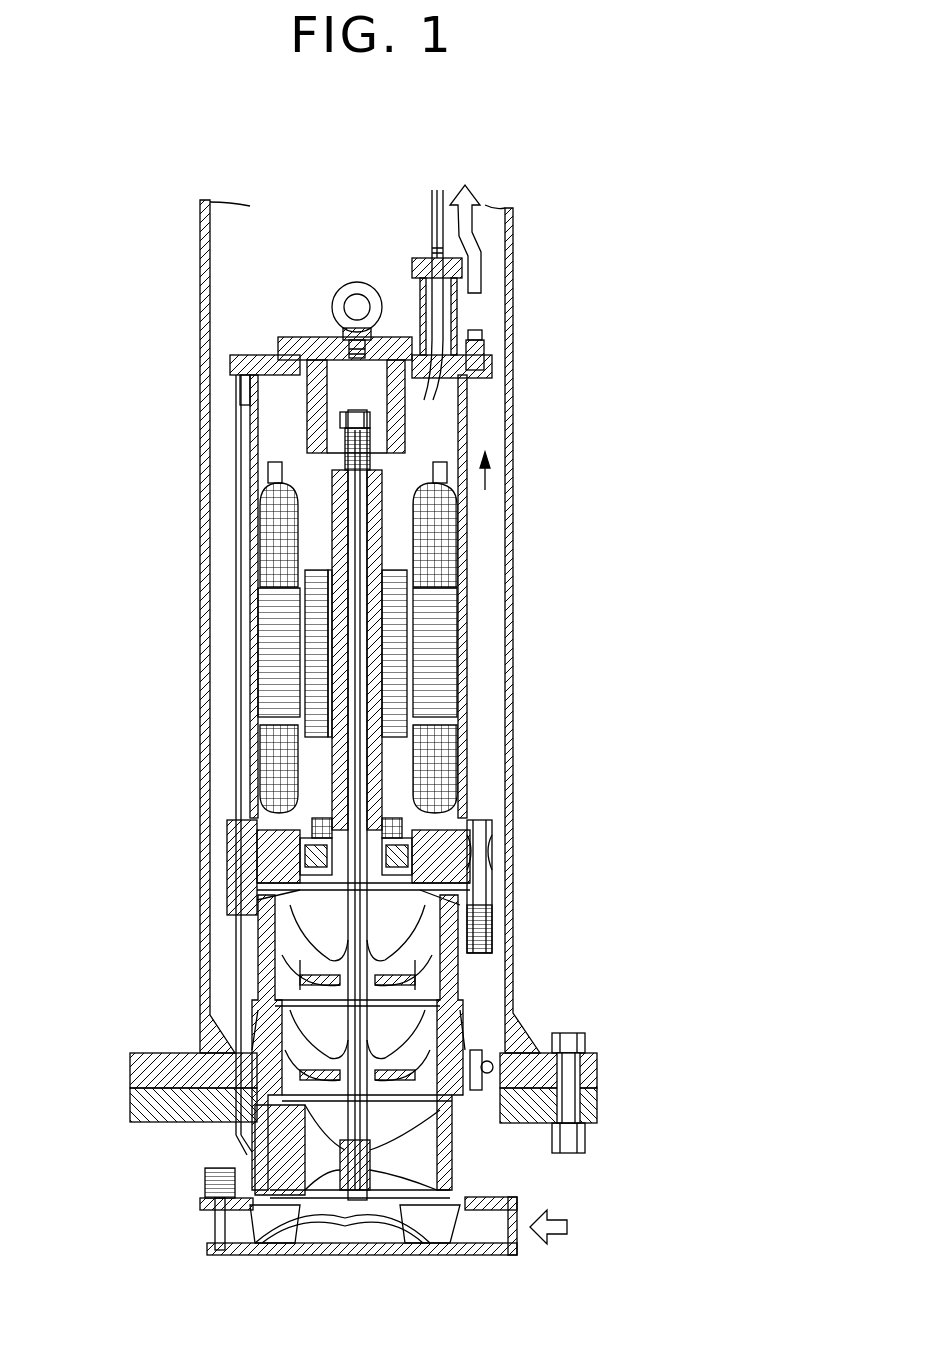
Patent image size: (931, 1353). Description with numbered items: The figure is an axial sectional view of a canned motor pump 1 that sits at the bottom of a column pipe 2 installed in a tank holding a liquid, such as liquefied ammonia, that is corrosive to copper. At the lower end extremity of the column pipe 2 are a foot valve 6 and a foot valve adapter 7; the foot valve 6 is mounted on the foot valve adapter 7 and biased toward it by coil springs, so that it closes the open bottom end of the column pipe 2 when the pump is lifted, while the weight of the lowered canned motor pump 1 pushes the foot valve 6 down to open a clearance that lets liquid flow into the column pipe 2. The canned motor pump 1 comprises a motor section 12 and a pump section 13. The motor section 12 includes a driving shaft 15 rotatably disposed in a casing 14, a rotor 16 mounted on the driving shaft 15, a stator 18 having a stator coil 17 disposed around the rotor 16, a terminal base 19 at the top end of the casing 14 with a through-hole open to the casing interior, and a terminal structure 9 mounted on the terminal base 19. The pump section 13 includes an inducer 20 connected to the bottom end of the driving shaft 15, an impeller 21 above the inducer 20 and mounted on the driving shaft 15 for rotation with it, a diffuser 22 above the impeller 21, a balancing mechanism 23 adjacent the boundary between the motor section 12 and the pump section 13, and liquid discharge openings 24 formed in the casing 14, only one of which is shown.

The canned motor pump 1 is at (225, 575).
The column pipe 2 is at (512, 310).
The foot valve 6 is at (485, 1227).
The foot valve adapter 7 is at (597, 1095).
The terminal structure 9 is at (396, 308).
The motor section 12 is at (272, 632).
The pump section 13 is at (268, 890).
The casing 14 is at (468, 530).
The driving shaft 15 is at (355, 760).
The rotor 16 is at (392, 640).
The stator coil 17 is at (280, 515).
The stator 18 is at (440, 673).
The terminal base 19 is at (490, 358).
The inducer 20 is at (345, 1190).
The impeller 21 is at (240, 1135).
The diffuser 22 is at (290, 1025).
The balancing mechanism 23 is at (305, 846).
The liquid discharge openings 24 is at (470, 878).